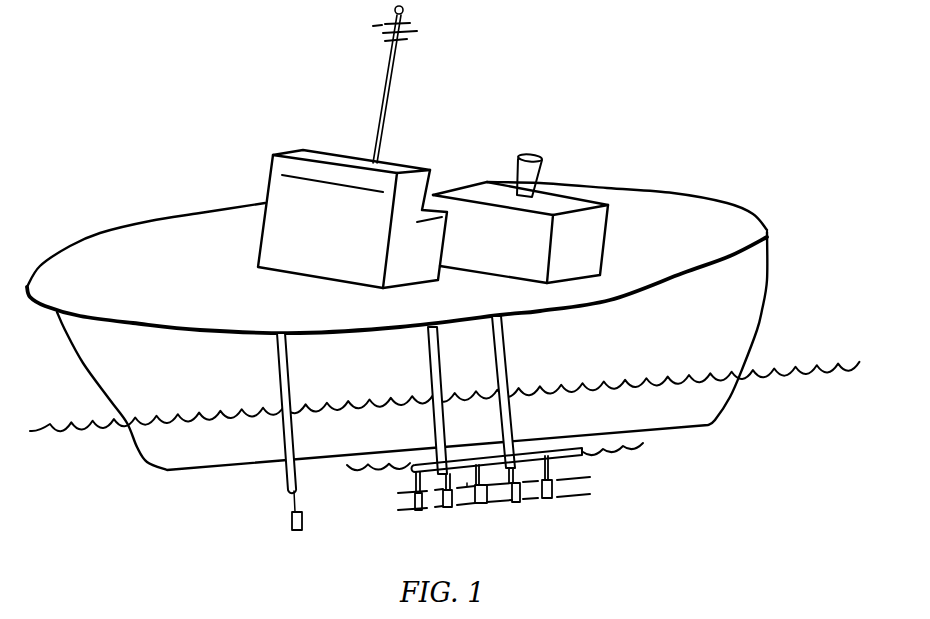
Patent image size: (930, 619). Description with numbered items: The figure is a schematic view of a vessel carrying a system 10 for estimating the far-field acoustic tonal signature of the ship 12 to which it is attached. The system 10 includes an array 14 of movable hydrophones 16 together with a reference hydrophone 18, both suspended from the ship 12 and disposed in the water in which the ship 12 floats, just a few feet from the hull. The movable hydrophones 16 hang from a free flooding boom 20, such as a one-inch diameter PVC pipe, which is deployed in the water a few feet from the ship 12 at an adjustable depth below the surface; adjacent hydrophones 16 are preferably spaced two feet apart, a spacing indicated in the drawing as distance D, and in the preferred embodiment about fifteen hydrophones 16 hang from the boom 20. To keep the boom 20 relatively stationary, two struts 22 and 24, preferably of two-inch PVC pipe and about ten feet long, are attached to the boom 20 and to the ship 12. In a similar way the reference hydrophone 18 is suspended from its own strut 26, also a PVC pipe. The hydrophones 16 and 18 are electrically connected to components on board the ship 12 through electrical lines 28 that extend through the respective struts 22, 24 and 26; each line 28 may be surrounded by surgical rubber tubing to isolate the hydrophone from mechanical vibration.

The system 10 is at (552, 515).
The ship 12 is at (752, 310).
The array 14 is at (480, 519).
The movable hydrophones 16 is at (517, 503).
The reference hydrophone 18 is at (298, 531).
The free flooding boom 20 is at (583, 455).
The strut 22 is at (508, 360).
The strut 24 is at (428, 372).
The strut 26 is at (285, 478).
The electrical lines 28 is at (415, 478).
The element spacing D is at (467, 486).